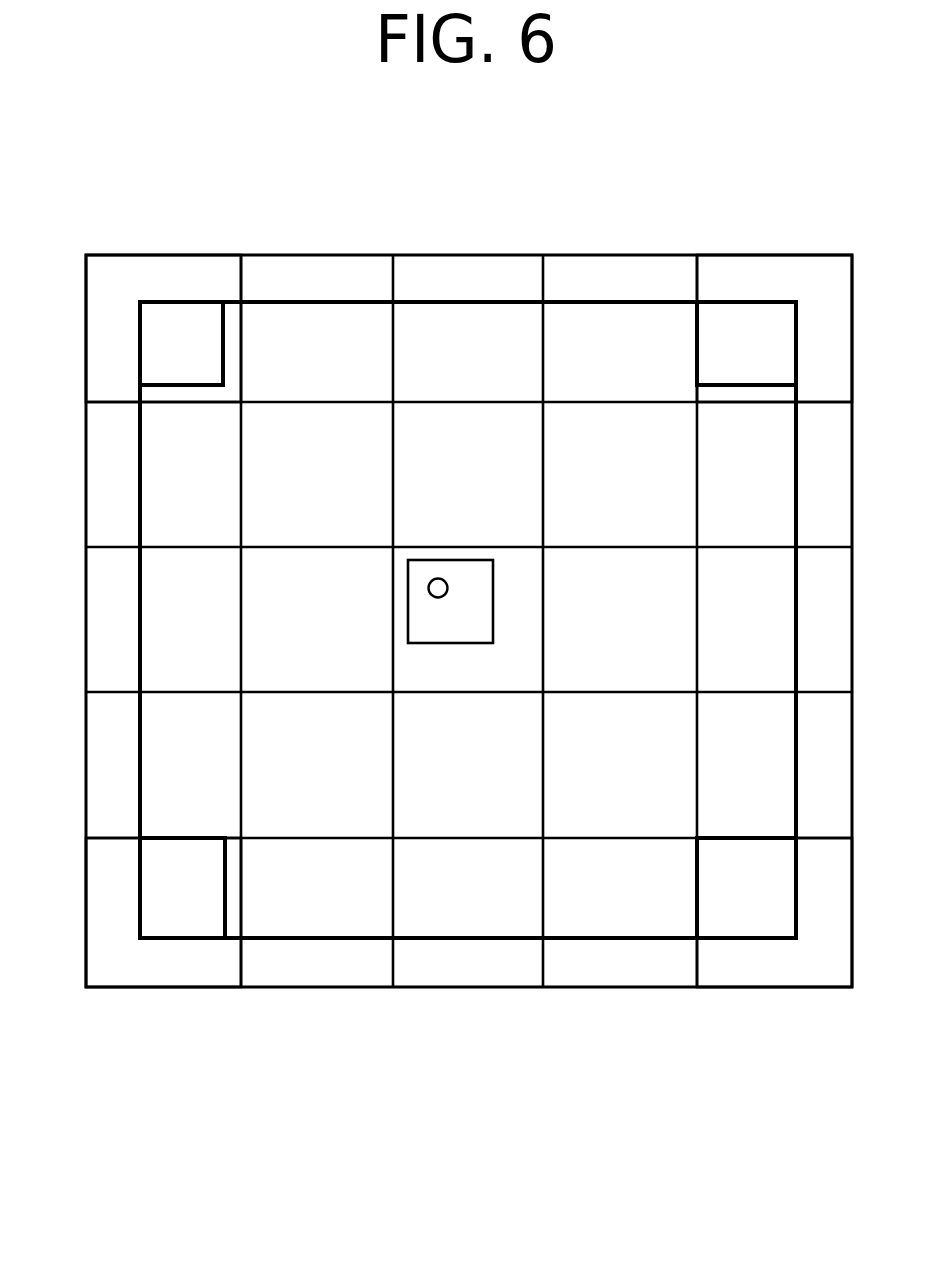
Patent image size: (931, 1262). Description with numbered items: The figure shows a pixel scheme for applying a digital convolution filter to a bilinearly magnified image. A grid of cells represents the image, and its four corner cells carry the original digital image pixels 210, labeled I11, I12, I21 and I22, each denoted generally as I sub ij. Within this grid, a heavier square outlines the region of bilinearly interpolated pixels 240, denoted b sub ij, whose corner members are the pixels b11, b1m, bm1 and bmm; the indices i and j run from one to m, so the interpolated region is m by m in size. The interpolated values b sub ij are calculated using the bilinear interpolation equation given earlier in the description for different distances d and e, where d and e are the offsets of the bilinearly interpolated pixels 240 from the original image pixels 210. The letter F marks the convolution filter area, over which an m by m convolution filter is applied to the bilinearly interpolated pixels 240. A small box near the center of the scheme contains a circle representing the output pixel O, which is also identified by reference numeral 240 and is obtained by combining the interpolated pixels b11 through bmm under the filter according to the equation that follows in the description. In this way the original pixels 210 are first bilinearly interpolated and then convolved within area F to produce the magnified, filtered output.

The original digital image pixels 210 is at (113, 267).
The bilinearly interpolated pixels 240 is at (463, 630).
The convolution filter area F is at (469, 621).
The original digital image pixel I11 is at (163, 328).
The original digital image pixel I12 is at (774, 328).
The original digital image pixel I21 is at (163, 912).
The original digital image pixel I22 is at (774, 912).
The bilinearly interpolated pixel b11 is at (181, 343).
The bilinearly interpolated pixel b1m is at (746, 343).
The bilinearly interpolated pixel bm1 is at (182, 888).
The bilinearly interpolated pixel bmm is at (746, 888).